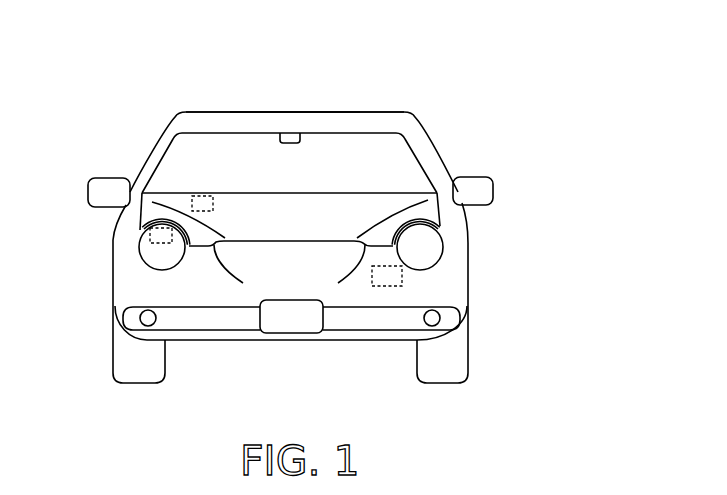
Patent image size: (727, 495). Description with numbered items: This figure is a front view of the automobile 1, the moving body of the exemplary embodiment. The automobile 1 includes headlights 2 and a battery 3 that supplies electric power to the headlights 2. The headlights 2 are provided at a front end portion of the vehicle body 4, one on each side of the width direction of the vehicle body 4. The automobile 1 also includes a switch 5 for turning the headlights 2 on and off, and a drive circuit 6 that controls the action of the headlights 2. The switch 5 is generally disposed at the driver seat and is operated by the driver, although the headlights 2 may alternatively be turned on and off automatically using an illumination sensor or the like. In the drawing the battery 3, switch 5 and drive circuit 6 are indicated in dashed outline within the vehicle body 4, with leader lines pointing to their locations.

The automobile 1 is at (443, 72).
The headlights 2 is at (152, 250).
The battery 3 is at (389, 287).
The vehicle body 4 is at (351, 113).
The switch 5 is at (190, 198).
The drive circuit 6 is at (150, 243).